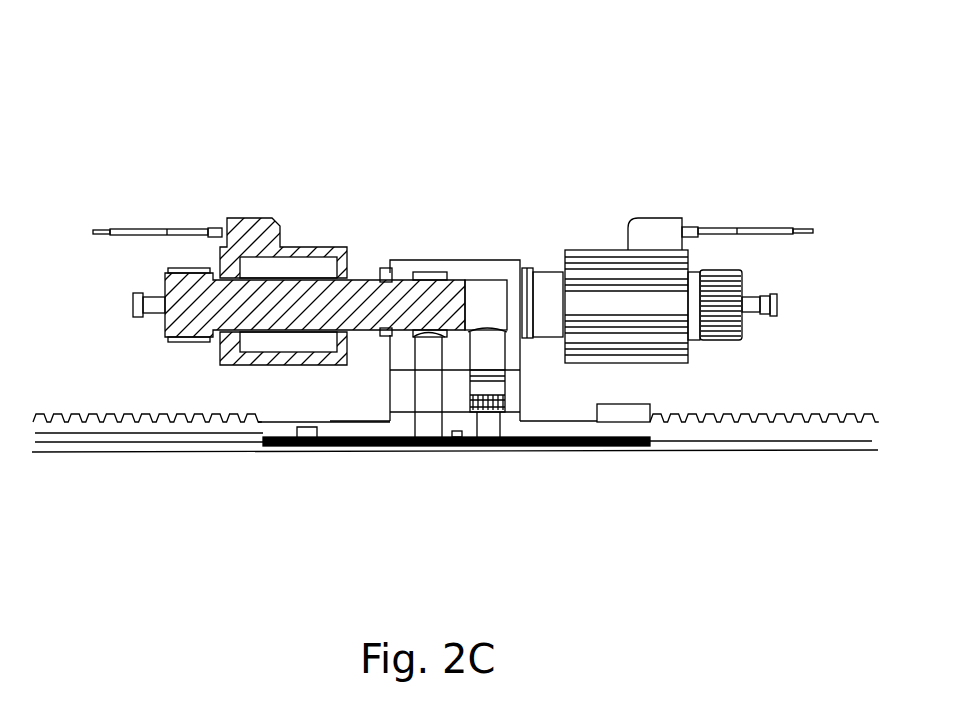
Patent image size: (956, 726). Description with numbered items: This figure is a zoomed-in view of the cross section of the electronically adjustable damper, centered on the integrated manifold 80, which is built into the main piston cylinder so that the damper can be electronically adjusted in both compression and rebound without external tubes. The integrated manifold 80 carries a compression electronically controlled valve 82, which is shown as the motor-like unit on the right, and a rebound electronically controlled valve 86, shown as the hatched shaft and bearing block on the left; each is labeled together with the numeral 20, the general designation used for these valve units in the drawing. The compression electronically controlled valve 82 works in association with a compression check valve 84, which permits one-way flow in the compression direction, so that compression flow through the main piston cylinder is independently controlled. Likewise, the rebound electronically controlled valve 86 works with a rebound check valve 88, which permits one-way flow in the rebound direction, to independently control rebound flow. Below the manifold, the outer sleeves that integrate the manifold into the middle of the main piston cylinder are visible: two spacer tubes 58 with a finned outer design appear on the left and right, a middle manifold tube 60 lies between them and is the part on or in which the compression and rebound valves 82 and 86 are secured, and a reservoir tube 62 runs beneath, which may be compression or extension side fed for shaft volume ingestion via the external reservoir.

The drive module 20 is at (406, 253).
The rebound electronically controlled valve 86 is at (296, 250).
The compression electronically controlled valve 82 is at (607, 275).
The integrated manifold 80 is at (447, 80).
The compression check valve 84 is at (427, 396).
The rebound check valve 88 is at (487, 403).
The middle manifold tube 60 is at (557, 418).
The reservoir tube 62 is at (683, 445).
The spacer tubes 58 is at (83, 415).